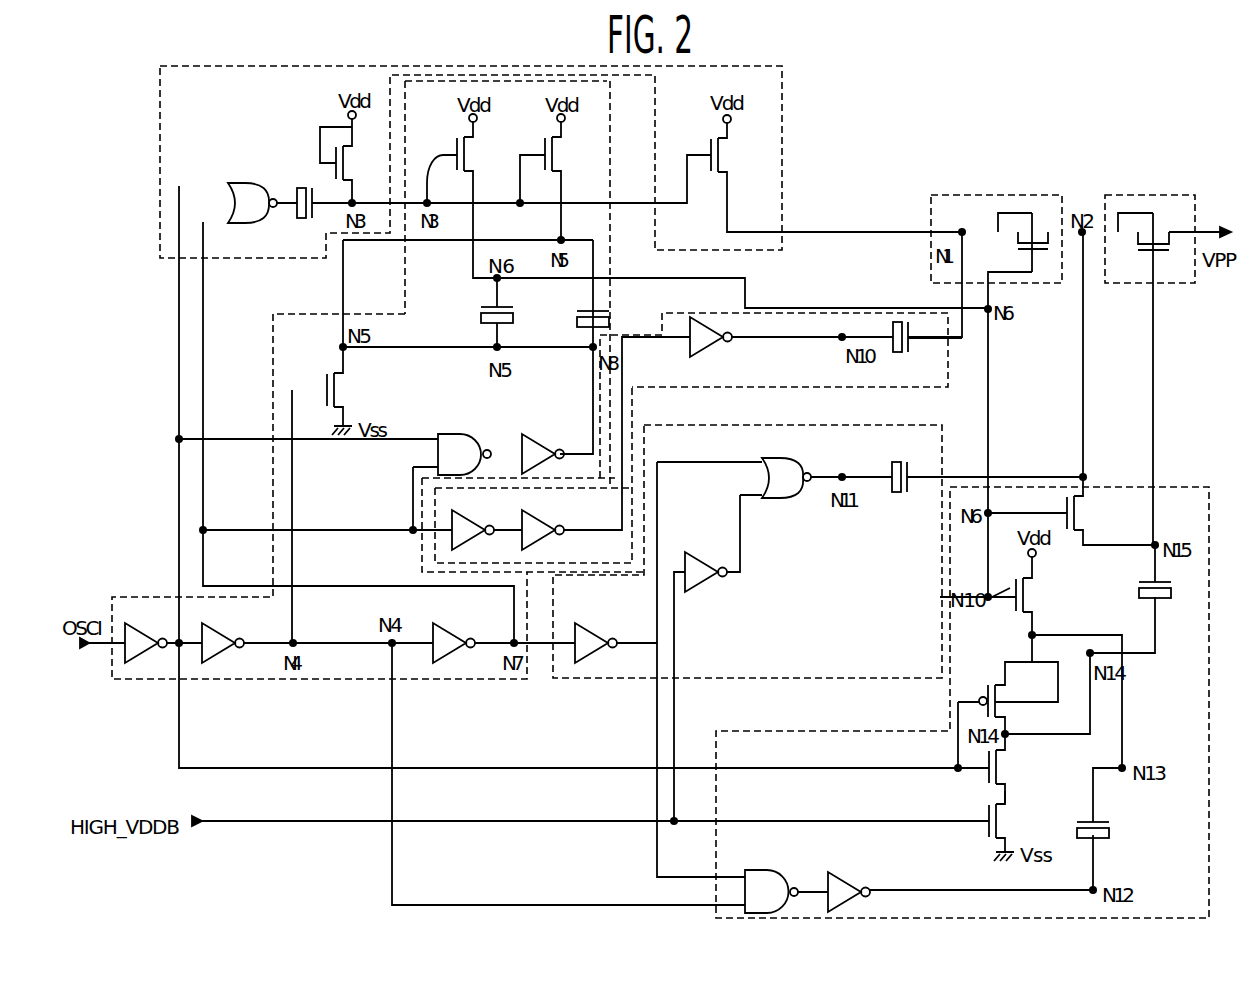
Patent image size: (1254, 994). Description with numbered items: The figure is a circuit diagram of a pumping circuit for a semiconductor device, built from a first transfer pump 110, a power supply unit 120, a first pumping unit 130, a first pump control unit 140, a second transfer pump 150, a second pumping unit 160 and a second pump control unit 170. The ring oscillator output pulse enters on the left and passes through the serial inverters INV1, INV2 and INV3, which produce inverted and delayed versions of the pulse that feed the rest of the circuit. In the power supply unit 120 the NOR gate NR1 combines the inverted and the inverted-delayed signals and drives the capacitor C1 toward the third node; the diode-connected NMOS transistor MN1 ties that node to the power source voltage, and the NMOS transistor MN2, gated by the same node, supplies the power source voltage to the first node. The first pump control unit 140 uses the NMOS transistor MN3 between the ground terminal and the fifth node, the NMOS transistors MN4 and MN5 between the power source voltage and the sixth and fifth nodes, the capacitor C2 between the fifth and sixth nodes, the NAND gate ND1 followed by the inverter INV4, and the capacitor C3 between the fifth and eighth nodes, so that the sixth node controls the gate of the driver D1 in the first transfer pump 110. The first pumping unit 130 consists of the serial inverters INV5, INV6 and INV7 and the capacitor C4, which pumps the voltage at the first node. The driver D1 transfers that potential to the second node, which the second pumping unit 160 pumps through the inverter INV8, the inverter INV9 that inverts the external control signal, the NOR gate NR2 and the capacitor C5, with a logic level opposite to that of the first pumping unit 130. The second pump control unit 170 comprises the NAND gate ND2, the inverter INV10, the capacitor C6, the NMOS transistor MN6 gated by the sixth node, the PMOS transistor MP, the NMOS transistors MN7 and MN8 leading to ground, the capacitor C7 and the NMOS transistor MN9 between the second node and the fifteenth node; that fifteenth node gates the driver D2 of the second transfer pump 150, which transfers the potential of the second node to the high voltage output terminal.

The first transfer pump 110 is at (995, 195).
The power supply unit 120 is at (782, 102).
The first pumping unit 130 is at (949, 370).
The first pump control unit 140 is at (272, 362).
The second transfer pump 150 is at (1148, 195).
The second pumping unit 160 is at (907, 425).
The second pump control unit 170 is at (1163, 487).
The logic device NR1 is at (251, 189).
The logic device NR2 is at (784, 465).
The logic device ND1 is at (464, 441).
The logic device ND2 is at (771, 878).
The inverter INV1 is at (151, 633).
The inverter INV2 is at (227, 633).
The inverter INV3 is at (461, 635).
The inverter INV4 is at (550, 446).
The inverter INV5 is at (482, 523).
The inverter INV6 is at (553, 522).
The inverter INV7 is at (717, 349).
The inverter INV8 is at (604, 634).
The inverter INV9 is at (716, 581).
The inverter INV10 is at (859, 883).
The NMOS transistor MN1 is at (361, 163).
The NMOS transistor MN2 is at (737, 155).
The NMOS transistor MN3 is at (352, 390).
The NMOS transistor MN4 is at (483, 154).
The NMOS transistor MN5 is at (571, 154).
The NMOS transistor MN6 is at (1041, 595).
The NMOS transistor MN7 is at (1017, 767).
The NMOS transistor MN8 is at (1017, 821).
The NMOS transistor MN9 is at (1095, 513).
The PMOS transistor MP is at (1018, 698).
The capacitor C1 is at (306, 220).
The capacitor C2 is at (511, 319).
The capacitor C3 is at (607, 323).
The capacitor C4 is at (913, 347).
The capacitor C5 is at (913, 486).
The capacitor C6 is at (1107, 827).
The capacitor C7 is at (1170, 593).
The driver D1 is at (1022, 259).
The driver D2 is at (1148, 377).